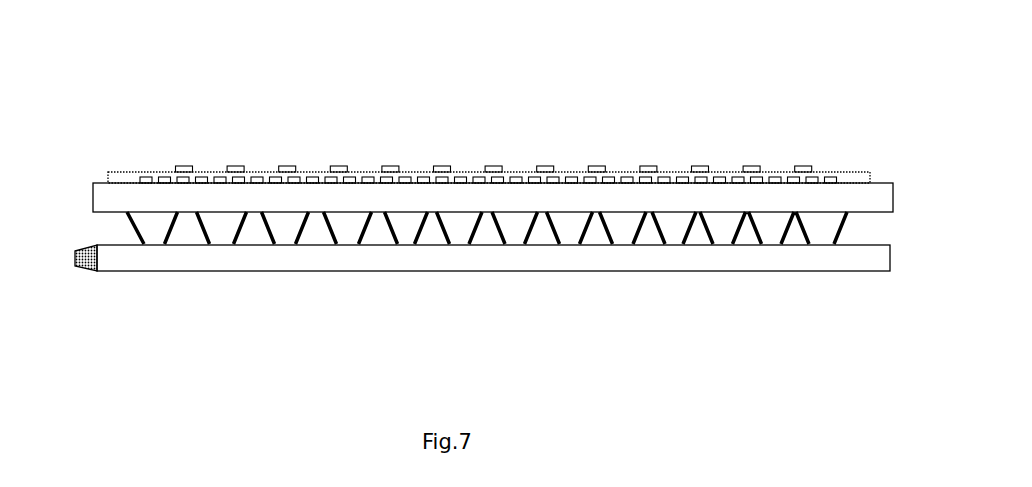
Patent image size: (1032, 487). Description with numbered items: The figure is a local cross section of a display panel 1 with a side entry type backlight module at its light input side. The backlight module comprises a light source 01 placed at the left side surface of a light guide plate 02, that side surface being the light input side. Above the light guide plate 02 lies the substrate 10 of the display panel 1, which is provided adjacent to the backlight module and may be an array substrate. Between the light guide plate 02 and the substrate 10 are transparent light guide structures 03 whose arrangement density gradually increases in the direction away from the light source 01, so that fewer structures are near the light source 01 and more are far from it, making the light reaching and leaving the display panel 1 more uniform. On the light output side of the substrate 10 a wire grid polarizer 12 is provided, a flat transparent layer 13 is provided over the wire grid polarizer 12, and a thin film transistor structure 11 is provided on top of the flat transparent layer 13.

The display panel 1 is at (367, 80).
The substrate 10 is at (225, 192).
The thin film transistor structure 11 is at (283, 155).
The wire grid polarizer 12 is at (367, 166).
The flat transparent layer 13 is at (316, 162).
The transparent light guide structure 03 is at (154, 221).
The light guide plate 02 is at (258, 269).
The light source 01 is at (87, 273).